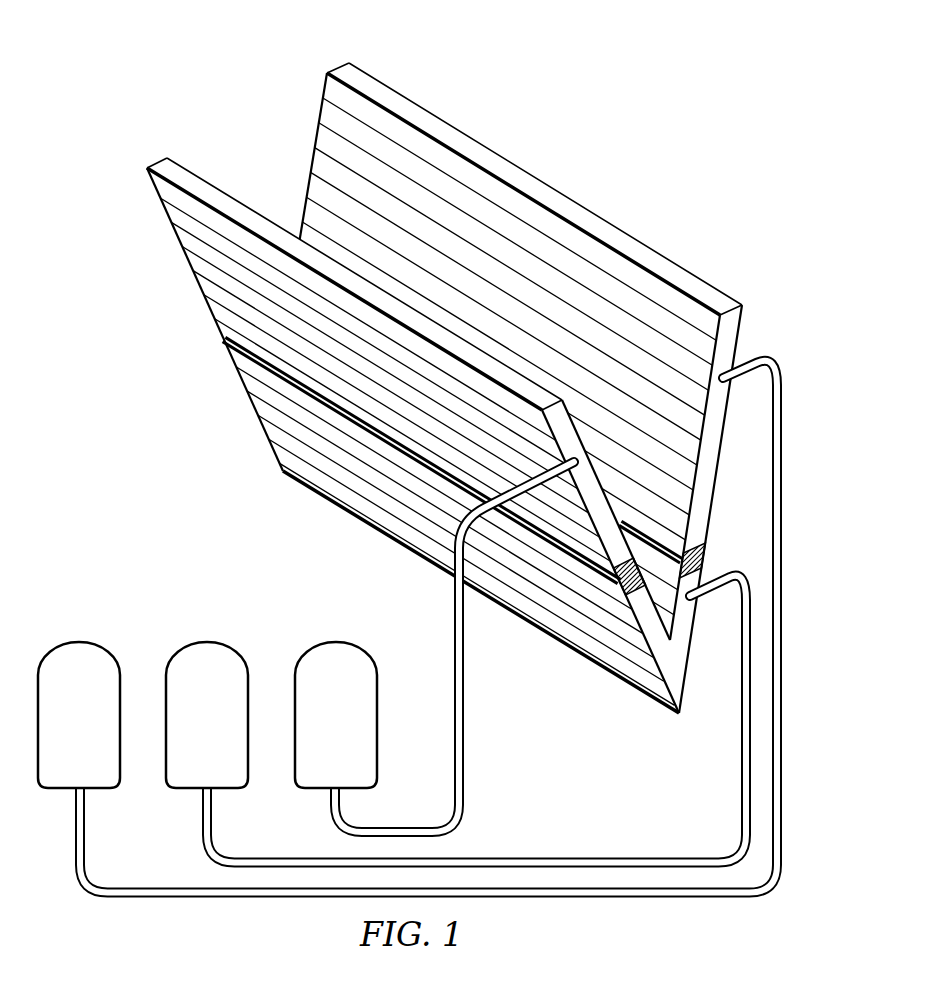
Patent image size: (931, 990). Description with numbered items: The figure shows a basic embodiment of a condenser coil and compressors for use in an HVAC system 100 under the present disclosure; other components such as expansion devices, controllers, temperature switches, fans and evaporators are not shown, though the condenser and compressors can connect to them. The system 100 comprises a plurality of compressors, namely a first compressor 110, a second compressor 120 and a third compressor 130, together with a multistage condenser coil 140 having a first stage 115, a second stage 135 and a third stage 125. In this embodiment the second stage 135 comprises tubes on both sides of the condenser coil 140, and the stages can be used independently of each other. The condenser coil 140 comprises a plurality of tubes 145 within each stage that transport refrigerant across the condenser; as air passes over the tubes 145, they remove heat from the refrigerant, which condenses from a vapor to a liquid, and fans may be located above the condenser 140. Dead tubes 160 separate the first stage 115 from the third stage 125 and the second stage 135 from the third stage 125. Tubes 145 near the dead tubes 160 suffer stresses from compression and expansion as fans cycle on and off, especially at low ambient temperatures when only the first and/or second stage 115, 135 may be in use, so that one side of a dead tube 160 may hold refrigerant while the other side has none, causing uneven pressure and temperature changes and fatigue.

The system 100 is at (128, 68).
The first compressor 110 is at (64, 728).
The first stage 115 is at (382, 174).
The second compressor 120 is at (192, 728).
The third stage 125 is at (313, 355).
The third compressor 130 is at (321, 728).
The second stage 135 is at (395, 435).
The multistage condenser coil 140 is at (491, 388).
The tubes 145 is at (203, 243).
The dead tubes 160 is at (437, 477).